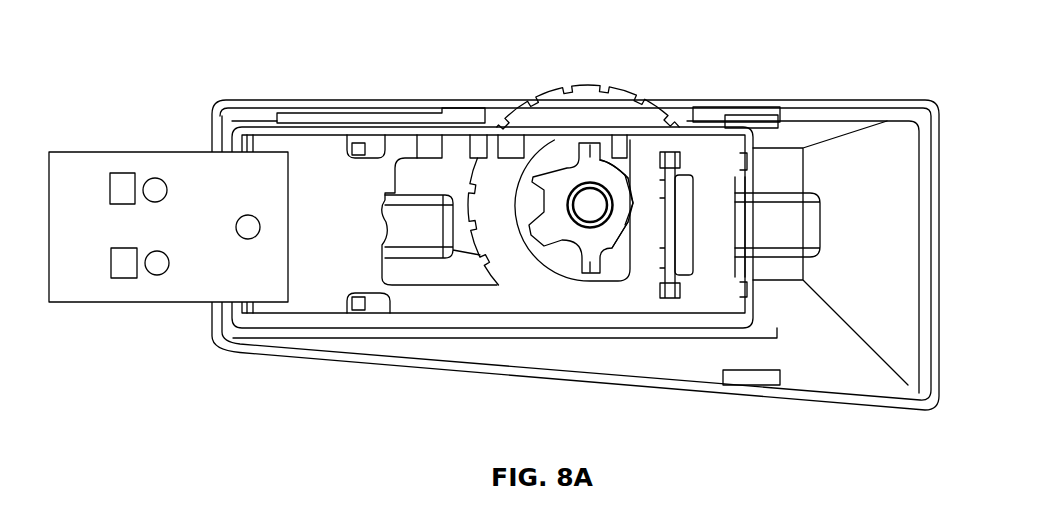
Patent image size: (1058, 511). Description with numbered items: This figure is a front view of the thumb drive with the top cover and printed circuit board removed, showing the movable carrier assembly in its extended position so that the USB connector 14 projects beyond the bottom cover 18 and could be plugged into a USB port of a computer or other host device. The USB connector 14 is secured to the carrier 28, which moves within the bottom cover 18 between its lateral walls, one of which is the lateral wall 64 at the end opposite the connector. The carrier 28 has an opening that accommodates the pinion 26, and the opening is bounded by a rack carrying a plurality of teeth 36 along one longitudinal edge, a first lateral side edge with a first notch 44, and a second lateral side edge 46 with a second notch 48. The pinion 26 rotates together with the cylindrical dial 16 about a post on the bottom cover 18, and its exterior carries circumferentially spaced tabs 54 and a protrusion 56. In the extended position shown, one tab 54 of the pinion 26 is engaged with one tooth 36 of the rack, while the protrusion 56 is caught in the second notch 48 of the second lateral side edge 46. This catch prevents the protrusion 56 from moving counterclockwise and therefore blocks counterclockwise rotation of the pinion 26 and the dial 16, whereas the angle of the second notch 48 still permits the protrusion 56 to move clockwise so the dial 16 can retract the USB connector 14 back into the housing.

The USB connector 14 is at (168, 163).
The cylindrical dial 16 is at (590, 160).
The bottom cover 18 is at (458, 106).
The pinion 26 is at (560, 185).
The carrier 28 is at (315, 152).
The teeth 36 is at (510, 143).
The first notch 44 is at (387, 207).
The second lateral side edge 46 is at (632, 242).
The second notch 48 is at (635, 200).
The tabs 54 is at (600, 148).
The protrusion 56 is at (633, 200).
The lateral wall 64 is at (928, 277).